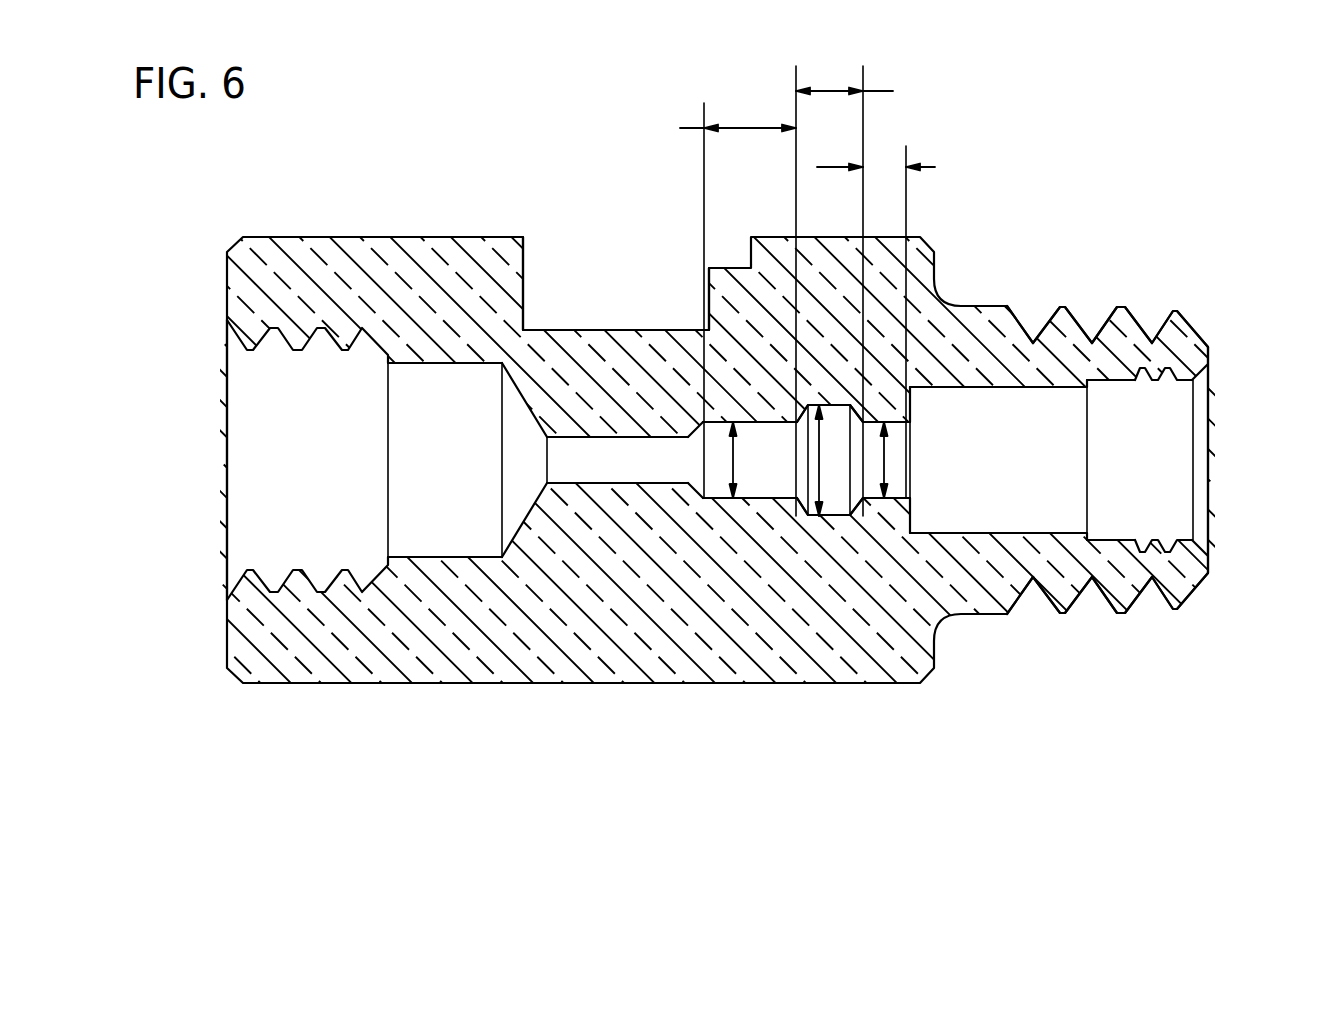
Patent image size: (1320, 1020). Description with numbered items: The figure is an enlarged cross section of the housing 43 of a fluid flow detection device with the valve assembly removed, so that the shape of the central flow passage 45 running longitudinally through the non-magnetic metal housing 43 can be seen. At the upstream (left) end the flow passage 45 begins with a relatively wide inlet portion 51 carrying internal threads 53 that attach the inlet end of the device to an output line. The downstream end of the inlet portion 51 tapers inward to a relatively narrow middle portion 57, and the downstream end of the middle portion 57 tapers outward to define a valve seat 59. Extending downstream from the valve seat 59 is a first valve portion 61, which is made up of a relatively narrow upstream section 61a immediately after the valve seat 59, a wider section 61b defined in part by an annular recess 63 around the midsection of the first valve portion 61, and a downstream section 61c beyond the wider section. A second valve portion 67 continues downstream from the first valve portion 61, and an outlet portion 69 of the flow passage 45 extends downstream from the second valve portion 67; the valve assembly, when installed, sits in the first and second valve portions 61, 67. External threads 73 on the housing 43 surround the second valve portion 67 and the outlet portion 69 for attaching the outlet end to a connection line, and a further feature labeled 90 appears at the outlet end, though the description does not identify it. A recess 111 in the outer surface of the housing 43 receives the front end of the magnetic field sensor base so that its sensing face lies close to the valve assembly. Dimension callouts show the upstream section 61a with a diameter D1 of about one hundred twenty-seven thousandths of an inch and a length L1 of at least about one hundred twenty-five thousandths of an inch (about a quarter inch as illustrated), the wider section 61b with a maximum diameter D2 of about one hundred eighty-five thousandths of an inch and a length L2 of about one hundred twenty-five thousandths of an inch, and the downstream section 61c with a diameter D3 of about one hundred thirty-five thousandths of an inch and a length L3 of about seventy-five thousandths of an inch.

The housing 43 is at (420, 697).
The recess 111 is at (612, 285).
The internal threads 53 is at (292, 352).
The inlet portion 51 is at (276, 516).
The middle portion 57 is at (580, 470).
The central flow passage 45 is at (634, 468).
The valve seat 59 is at (714, 497).
The first valve portion 61 is at (775, 460).
The upstream section 61a is at (745, 427).
The wider section 61b is at (843, 506).
The downstream section 61c is at (902, 428).
The annular recess 63 is at (878, 494).
The second valve portion 67 is at (1012, 420).
The outlet portion 69 is at (1140, 443).
The internal threads of outlet 90 is at (1158, 534).
The external threads 73 is at (1142, 311).
The diameter of upstream section D1 is at (733, 458).
The maximum diameter of wider section D2 is at (838, 466).
The diameter of downstream section D3 is at (886, 462).
The length of upstream section L1 is at (720, 300).
The length of wider section L2 is at (862, 291).
The length of downstream section L3 is at (876, 322).